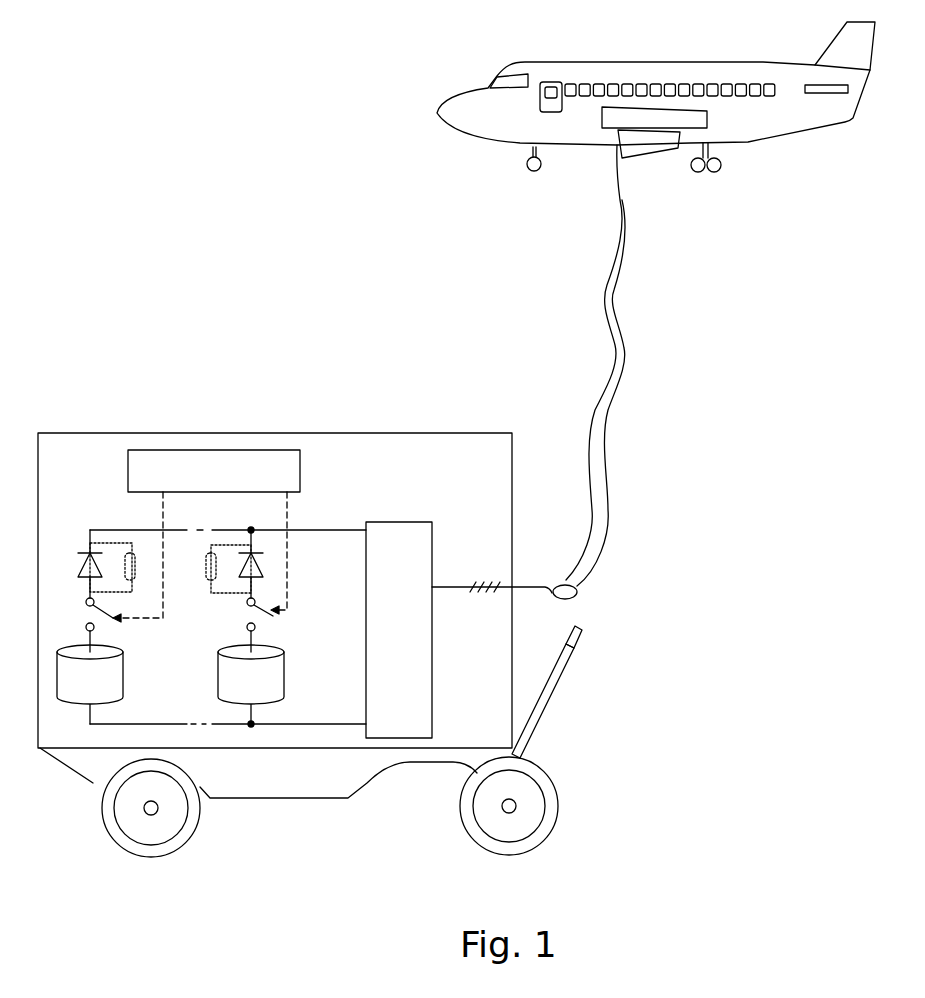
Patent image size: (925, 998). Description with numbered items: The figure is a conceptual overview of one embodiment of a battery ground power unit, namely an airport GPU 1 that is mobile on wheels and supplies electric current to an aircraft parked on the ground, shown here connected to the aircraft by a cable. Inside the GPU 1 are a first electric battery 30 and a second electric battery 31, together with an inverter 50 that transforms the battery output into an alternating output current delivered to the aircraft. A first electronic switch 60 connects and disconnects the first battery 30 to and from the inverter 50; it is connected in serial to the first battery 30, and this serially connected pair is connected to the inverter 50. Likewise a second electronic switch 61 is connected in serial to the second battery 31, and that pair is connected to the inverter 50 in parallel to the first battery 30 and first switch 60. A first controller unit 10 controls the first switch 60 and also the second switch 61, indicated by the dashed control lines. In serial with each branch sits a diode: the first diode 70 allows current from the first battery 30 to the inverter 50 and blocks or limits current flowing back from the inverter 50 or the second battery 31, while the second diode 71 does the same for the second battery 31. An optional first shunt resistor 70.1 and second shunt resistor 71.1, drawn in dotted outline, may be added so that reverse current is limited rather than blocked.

The airport GPU 1 is at (212, 433).
The first controller unit 10 is at (128, 463).
The inverter 50 is at (392, 521).
The first diode 70 is at (78, 567).
The first shunt resistor 70.1 is at (138, 568).
The second diode 71 is at (263, 563).
The second shunt resistor 71.1 is at (220, 563).
The first electronic switch 60 is at (86, 604).
The second electronic switch 61 is at (276, 618).
The first electric battery 30 is at (125, 660).
The second electric battery 31 is at (284, 680).